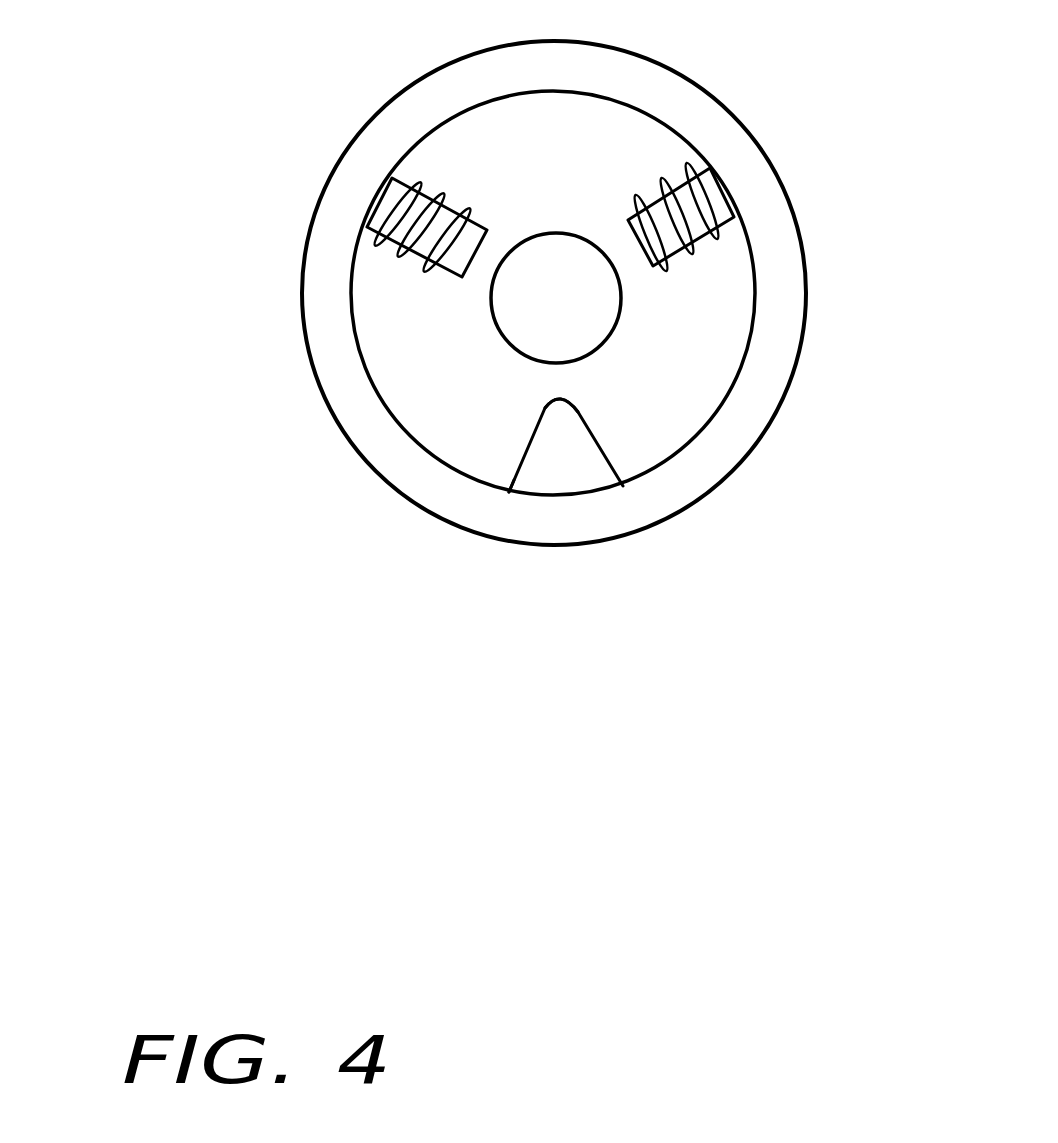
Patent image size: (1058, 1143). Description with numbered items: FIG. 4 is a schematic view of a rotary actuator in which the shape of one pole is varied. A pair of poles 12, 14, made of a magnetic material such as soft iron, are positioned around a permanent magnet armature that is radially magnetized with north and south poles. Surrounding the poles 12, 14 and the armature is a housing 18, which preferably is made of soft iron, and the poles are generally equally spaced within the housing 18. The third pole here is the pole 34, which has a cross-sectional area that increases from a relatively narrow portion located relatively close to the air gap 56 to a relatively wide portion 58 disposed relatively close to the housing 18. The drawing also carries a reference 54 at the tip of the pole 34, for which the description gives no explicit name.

The pole 12 is at (387, 201).
The pole 14 is at (716, 195).
The housing 18 is at (357, 347).
The pole 34 is at (578, 447).
The tooth tip 54 is at (562, 408).
The air gap 56 is at (562, 378).
The wide portion 58 is at (553, 481).